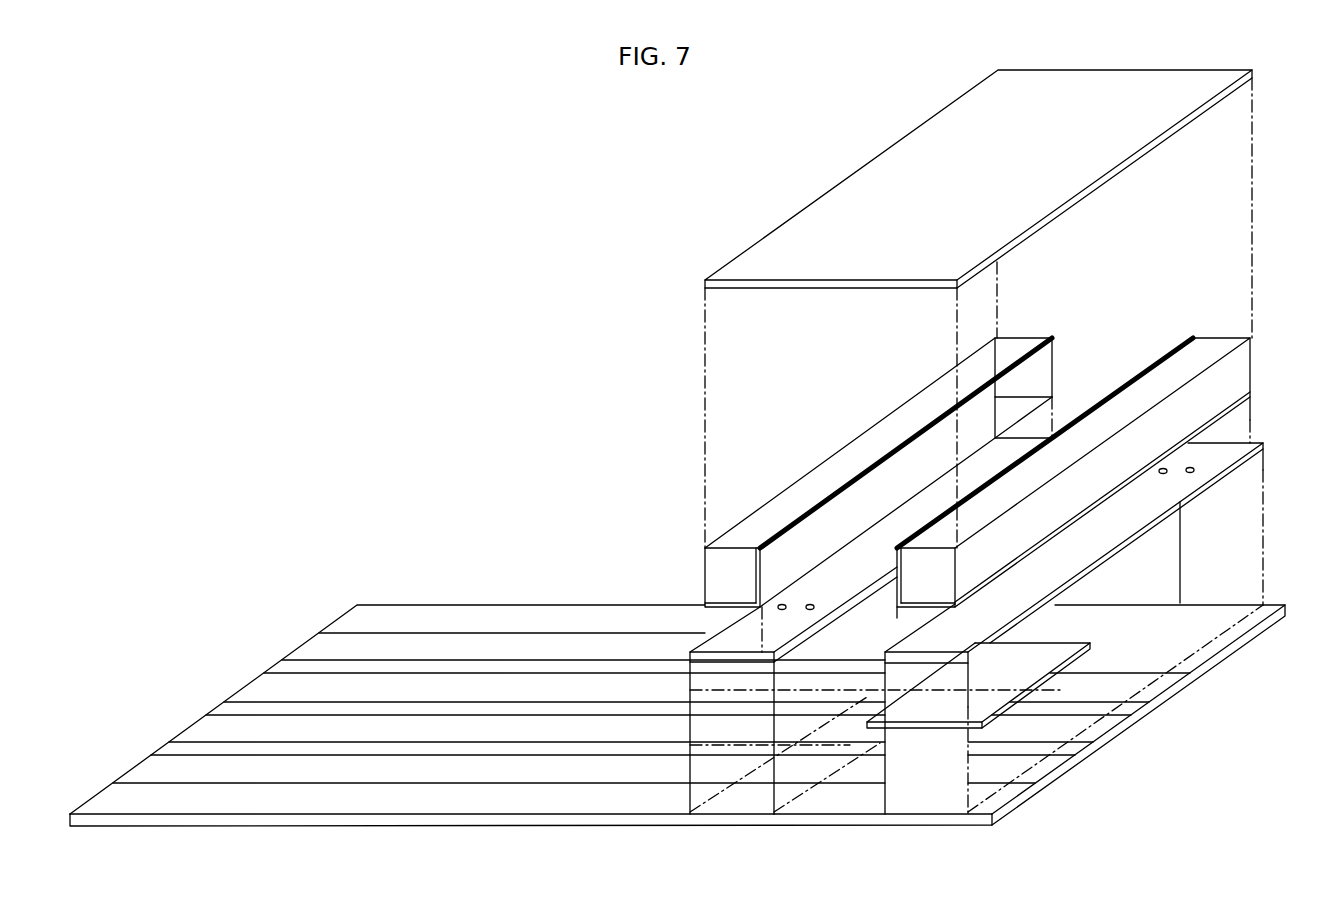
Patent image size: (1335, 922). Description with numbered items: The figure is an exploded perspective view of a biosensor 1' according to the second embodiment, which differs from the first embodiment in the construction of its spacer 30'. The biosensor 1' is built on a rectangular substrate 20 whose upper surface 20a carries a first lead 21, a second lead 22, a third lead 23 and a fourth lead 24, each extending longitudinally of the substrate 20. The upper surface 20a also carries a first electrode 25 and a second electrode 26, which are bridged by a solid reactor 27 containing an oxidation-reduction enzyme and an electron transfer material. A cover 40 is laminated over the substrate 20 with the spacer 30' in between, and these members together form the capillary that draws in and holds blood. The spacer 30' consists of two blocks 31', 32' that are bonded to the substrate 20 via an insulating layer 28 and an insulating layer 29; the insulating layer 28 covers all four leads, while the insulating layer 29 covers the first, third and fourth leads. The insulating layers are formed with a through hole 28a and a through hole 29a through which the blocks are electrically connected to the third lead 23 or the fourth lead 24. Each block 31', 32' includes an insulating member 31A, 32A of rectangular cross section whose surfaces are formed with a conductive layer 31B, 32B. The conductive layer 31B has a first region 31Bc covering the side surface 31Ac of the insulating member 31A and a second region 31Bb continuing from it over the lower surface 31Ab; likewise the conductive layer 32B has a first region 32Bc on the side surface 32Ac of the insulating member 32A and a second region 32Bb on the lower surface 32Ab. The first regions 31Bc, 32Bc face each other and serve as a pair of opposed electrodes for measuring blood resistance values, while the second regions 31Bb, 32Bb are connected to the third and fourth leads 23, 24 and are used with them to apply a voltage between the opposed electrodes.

The biosensor 1' is at (697, 488).
The substrate 20 is at (677, 755).
The upper surface 20a is at (840, 805).
The first lead 21 is at (488, 735).
The second lead 22 is at (550, 690).
The third lead 23 is at (455, 770).
The fourth lead 24 is at (600, 650).
The first electrode 25 is at (993, 724).
The second electrode 26 is at (1057, 683).
The reactor 27 is at (999, 663).
The insulating layer 28 is at (846, 576).
The through hole 28a is at (786, 604).
The insulating layer 29 is at (1138, 547).
The through hole 29a is at (1190, 476).
The spacer 30' is at (973, 491).
The block 31' is at (887, 491).
The block 32' is at (1064, 490).
The insulating member 31A is at (895, 443).
The lower surface 31Ab is at (770, 607).
The side surface 31Ac is at (762, 571).
The conductive layer 31B is at (887, 491).
The second region 31Bb is at (715, 655).
The first region 31Bc is at (1041, 362).
The insulating member 32A is at (1092, 472).
The lower surface 32Ab is at (960, 604).
The side surface 32Ac is at (897, 578).
The conductive layer 32B is at (1012, 490).
The second region 32Bb is at (893, 676).
The first region 32Bc is at (880, 606).
The cover 40 is at (952, 127).